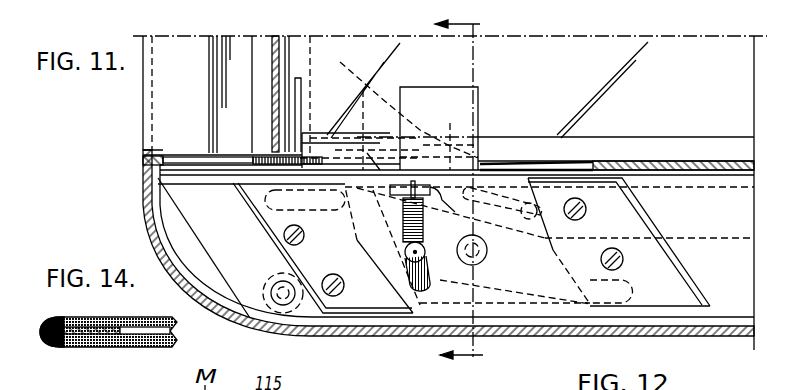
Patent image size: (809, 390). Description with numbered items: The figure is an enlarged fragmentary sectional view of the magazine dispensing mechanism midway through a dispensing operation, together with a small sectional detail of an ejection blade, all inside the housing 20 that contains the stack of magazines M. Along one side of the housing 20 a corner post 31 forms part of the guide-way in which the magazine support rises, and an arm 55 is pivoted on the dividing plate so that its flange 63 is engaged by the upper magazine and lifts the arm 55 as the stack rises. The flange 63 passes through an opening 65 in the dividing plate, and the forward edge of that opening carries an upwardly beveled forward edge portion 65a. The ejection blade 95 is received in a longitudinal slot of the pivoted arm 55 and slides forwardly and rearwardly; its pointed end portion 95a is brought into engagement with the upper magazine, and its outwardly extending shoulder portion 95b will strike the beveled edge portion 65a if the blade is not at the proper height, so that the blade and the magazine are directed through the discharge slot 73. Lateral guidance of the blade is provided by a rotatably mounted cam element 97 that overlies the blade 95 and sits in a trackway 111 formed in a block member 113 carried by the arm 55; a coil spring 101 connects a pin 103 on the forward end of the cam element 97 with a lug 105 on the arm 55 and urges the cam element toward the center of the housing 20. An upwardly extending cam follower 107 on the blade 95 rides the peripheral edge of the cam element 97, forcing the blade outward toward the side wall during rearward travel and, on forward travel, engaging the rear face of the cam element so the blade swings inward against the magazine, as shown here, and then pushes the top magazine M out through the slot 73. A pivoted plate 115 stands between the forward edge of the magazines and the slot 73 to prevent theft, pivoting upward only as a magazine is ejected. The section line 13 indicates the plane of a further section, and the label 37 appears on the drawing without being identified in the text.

In FIG. 11, the plate 115 is at (270, 46).
In FIG. 11, the pointed end portion 95a is at (359, 49).
In FIG. 11, the flange 63 is at (428, 96).
In FIG. 11, the shoulder portion 95b is at (468, 114).
In FIG. 11, the section line 13- 13 is at (479, 190).
In FIG. 11, the magazines M is at (549, 47).
In FIG. 14, the magazines M is at (143, 346).
In FIG. 11, the ejection blade 95 is at (520, 168).
In FIG. 14, the ejection blade 95 is at (88, 343).
In FIG. 11, the opening 65 is at (603, 166).
In FIG. 11, the upwardly beveled forward edge portion 65a is at (264, 158).
In FIG. 11, the corner post 31 is at (307, 132).
In FIG. 11, the guide 37 is at (337, 146).
In FIG. 11, the slot 73 is at (145, 152).
In FIG. 11, the arm 55 is at (230, 250).
In FIG. 11, the trackway 111 is at (323, 248).
In FIG. 11, the coil spring 101 is at (404, 216).
In FIG. 11, the lug 105 is at (440, 208).
In FIG. 11, the pin 103 is at (418, 252).
In FIG. 11, the cam follower 107 is at (527, 217).
In FIG. 11, the cam element 97 is at (508, 290).
In FIG. 11, the block member 113 is at (697, 296).
In FIG. 11, the housing 20 is at (413, 337).